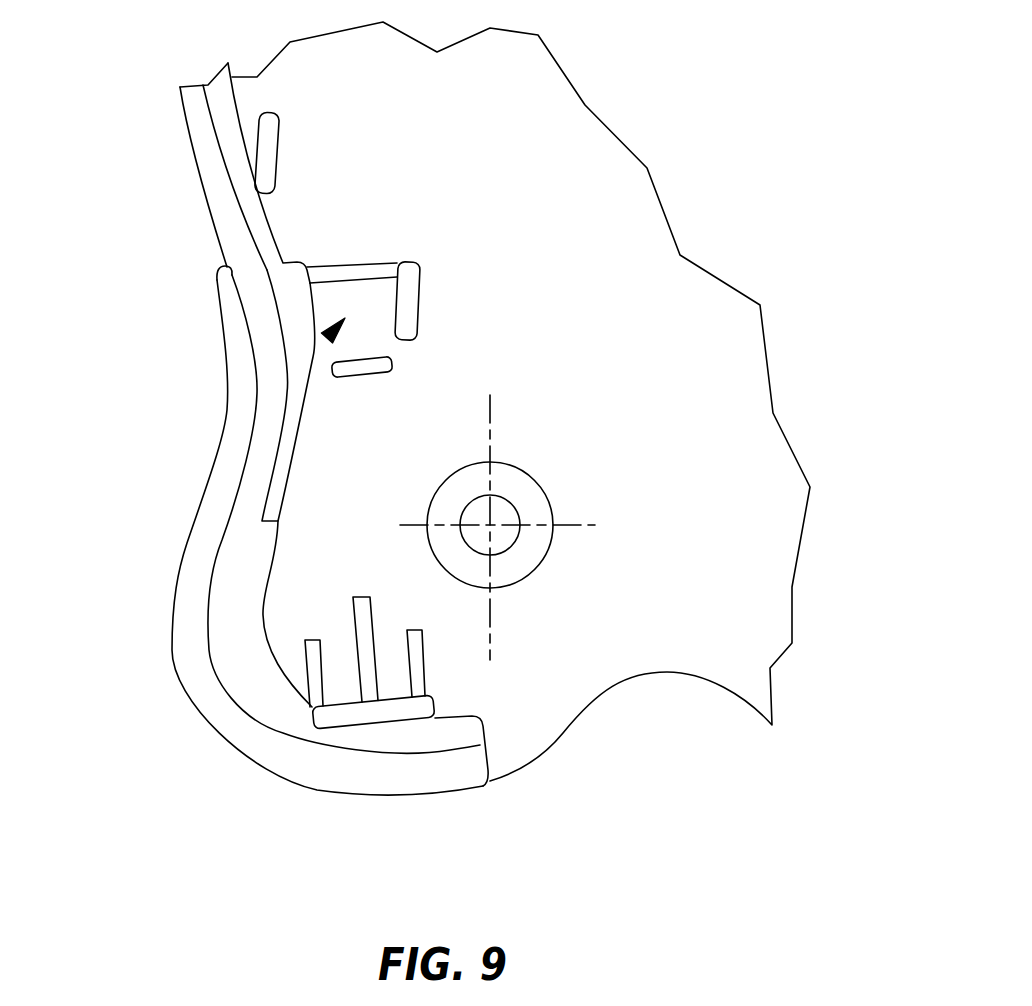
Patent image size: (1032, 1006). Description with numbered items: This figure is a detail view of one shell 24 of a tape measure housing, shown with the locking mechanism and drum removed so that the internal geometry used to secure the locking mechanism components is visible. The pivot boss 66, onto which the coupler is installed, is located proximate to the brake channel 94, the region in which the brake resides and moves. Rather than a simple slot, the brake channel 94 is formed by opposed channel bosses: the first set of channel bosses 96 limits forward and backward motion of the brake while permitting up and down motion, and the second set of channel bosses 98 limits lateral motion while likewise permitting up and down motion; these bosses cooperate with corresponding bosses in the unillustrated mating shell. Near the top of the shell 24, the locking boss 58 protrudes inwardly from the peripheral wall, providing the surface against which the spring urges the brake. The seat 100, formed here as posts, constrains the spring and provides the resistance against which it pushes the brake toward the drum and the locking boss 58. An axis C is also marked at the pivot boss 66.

The shell 24 is at (222, 377).
The locking boss 58 is at (267, 132).
The pivot boss 66 is at (523, 553).
The brake channel 94 is at (327, 338).
The first set of channel bosses 96 is at (308, 310).
The second set of channel bosses 98 is at (356, 270).
The seat 100 is at (363, 632).
The center axis C is at (483, 520).